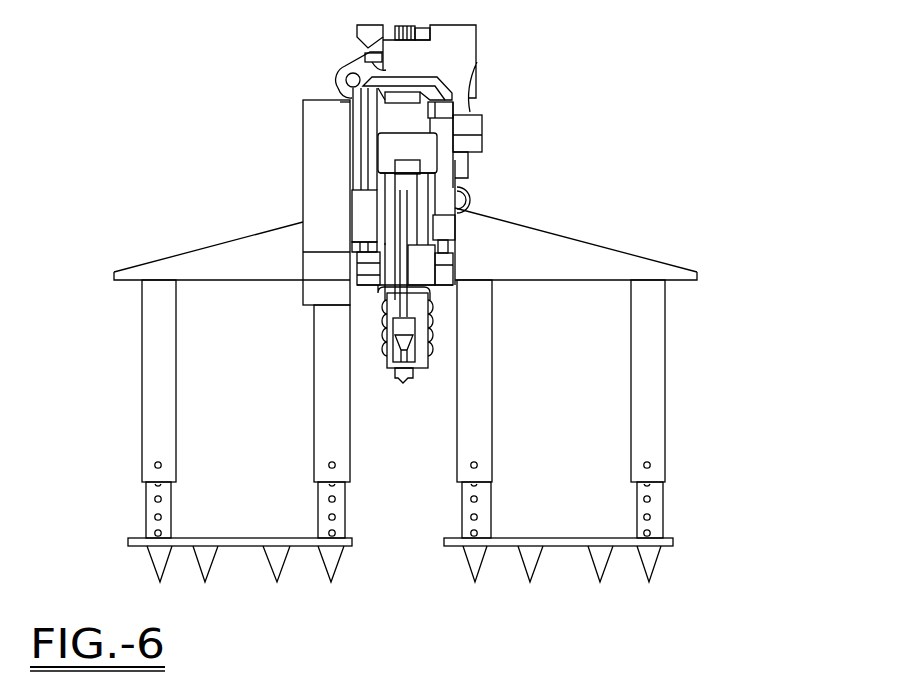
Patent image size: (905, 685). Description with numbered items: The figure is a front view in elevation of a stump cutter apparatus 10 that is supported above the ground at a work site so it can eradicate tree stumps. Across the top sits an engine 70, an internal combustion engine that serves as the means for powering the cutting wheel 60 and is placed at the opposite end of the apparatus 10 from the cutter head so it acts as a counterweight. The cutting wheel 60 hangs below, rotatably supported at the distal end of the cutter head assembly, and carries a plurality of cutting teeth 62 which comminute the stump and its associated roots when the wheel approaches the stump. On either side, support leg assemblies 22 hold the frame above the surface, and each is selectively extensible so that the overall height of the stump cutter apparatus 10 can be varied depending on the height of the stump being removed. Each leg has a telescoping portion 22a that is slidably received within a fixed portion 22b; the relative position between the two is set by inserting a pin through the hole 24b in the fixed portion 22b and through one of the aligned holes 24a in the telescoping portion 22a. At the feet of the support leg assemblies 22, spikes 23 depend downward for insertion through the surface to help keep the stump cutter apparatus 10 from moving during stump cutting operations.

The stump cutter apparatus 10 is at (230, 142).
The engine 70 is at (474, 58).
The cutting wheel 60 is at (410, 366).
The cutting teeth 62 is at (398, 382).
The support leg assemblies 22 is at (400, 409).
The fixed portions 22b is at (410, 382).
The telescoping portions 22a is at (409, 509).
The hole 24b is at (156, 463).
The aligned holes 24a is at (156, 516).
The spikes 23 is at (334, 578).